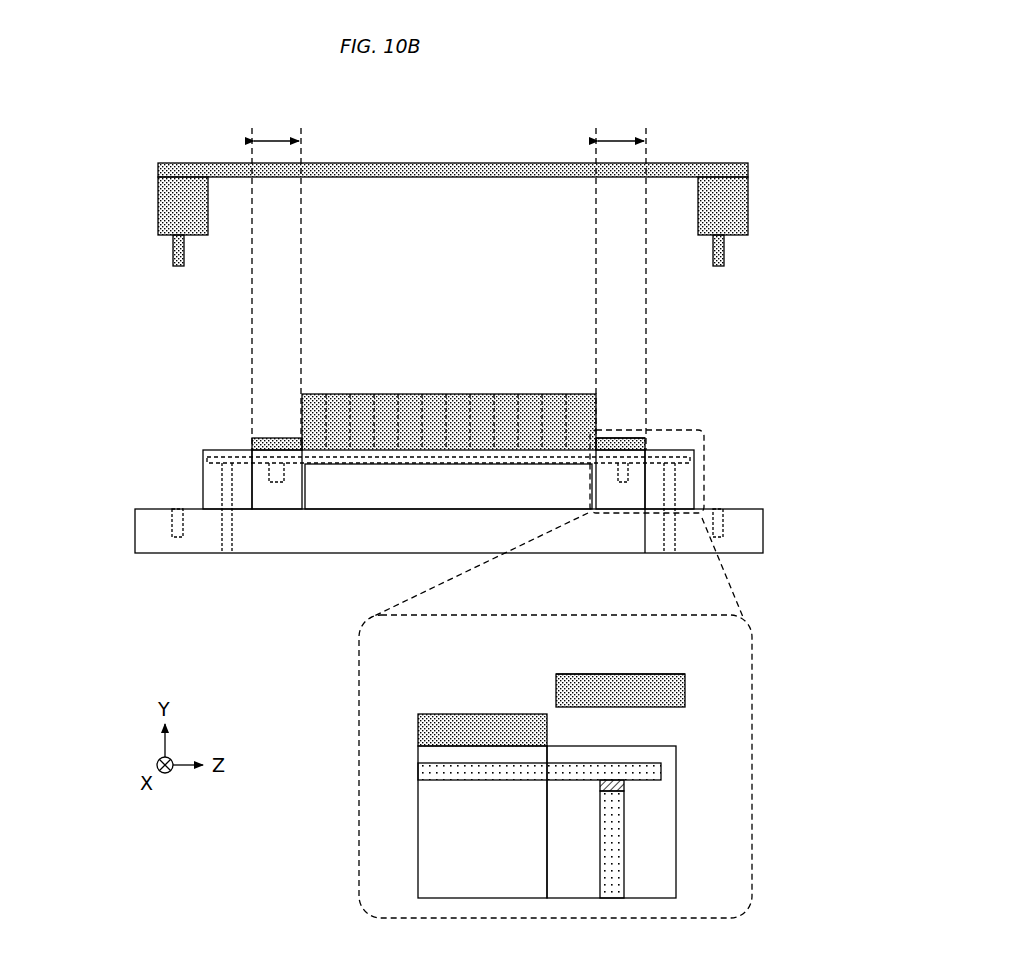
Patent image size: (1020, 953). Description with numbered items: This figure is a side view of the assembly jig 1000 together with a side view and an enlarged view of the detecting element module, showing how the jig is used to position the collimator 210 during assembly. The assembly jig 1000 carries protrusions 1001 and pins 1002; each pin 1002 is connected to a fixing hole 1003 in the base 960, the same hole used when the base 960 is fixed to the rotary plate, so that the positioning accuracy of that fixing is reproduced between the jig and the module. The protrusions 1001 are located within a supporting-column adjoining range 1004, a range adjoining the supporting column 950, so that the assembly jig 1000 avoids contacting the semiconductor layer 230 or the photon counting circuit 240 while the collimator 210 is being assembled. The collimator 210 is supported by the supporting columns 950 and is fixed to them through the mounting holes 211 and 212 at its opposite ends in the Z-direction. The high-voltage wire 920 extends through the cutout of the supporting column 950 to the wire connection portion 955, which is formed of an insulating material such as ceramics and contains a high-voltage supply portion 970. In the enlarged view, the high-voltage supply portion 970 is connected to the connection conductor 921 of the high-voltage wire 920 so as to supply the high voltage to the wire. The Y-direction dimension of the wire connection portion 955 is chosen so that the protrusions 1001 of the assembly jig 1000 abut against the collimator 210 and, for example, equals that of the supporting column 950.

The assembly jig 1000 is at (822, 147).
The protrusion 1001 is at (556, 690).
The pin 1002 is at (178, 266).
The fixing hole 1003 is at (178, 508).
The supporting-column adjoining range 1004 is at (449, 281).
The base 960 is at (160, 509).
The wire connection portion 955 is at (222, 450).
The supporting column 950 is at (282, 497).
The mounting hole 212 is at (282, 438).
The collimator 210 is at (614, 438).
The mounting hole 211 is at (622, 438).
The semiconductor layer 230 is at (448, 497).
The photon counting circuit 240 is at (405, 495).
The high voltage wire 920 is at (657, 457).
The connection conductor 921 is at (625, 785).
The high-voltage supply portion 970 is at (228, 553).